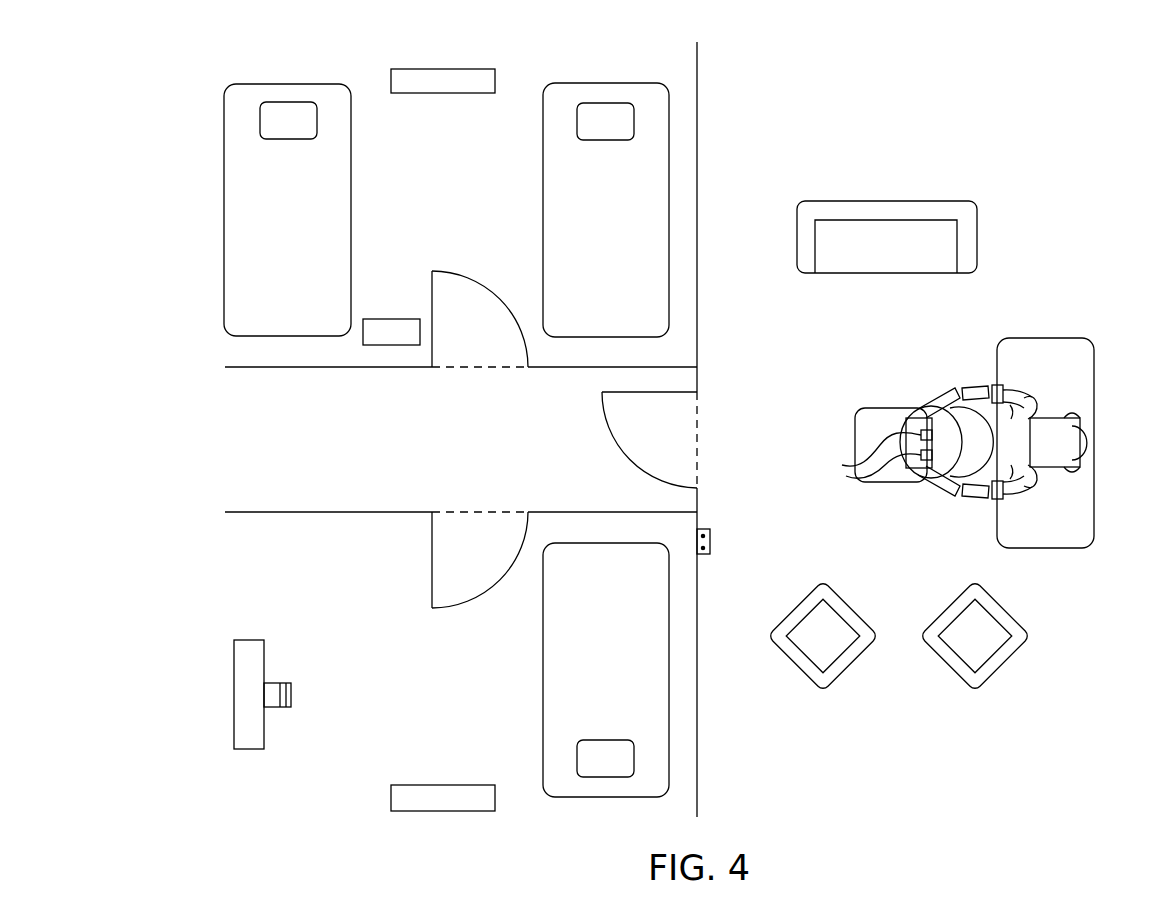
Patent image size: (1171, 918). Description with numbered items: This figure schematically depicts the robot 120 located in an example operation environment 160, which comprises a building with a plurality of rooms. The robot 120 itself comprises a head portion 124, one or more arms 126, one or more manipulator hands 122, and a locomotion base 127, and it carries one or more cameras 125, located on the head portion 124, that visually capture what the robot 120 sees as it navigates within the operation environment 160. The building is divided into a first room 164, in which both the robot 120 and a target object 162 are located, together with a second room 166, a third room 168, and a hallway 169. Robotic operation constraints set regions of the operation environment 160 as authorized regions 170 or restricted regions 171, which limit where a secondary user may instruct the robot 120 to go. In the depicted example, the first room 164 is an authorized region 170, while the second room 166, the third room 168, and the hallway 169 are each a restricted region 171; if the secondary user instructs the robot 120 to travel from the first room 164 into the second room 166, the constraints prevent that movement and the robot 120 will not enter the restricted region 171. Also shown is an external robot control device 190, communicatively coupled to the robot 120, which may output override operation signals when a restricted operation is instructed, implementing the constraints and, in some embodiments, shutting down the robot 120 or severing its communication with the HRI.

The robot 120 is at (940, 425).
The manipulator hands 122 is at (1034, 398).
The head portion 124 is at (910, 476).
The cameras 125 is at (848, 462).
The arms 126 is at (977, 385).
The locomotion base 127 is at (868, 406).
The operation environment 160 is at (955, 386).
The target object 162 is at (1070, 428).
The first room 164 is at (855, 173).
The second room 166 is at (454, 214).
The third room 168 is at (436, 672).
The hallway 169 is at (383, 415).
The authorized region 170 is at (899, 386).
The restricted region 171 is at (399, 226).
The external robot control device 190 is at (710, 541).